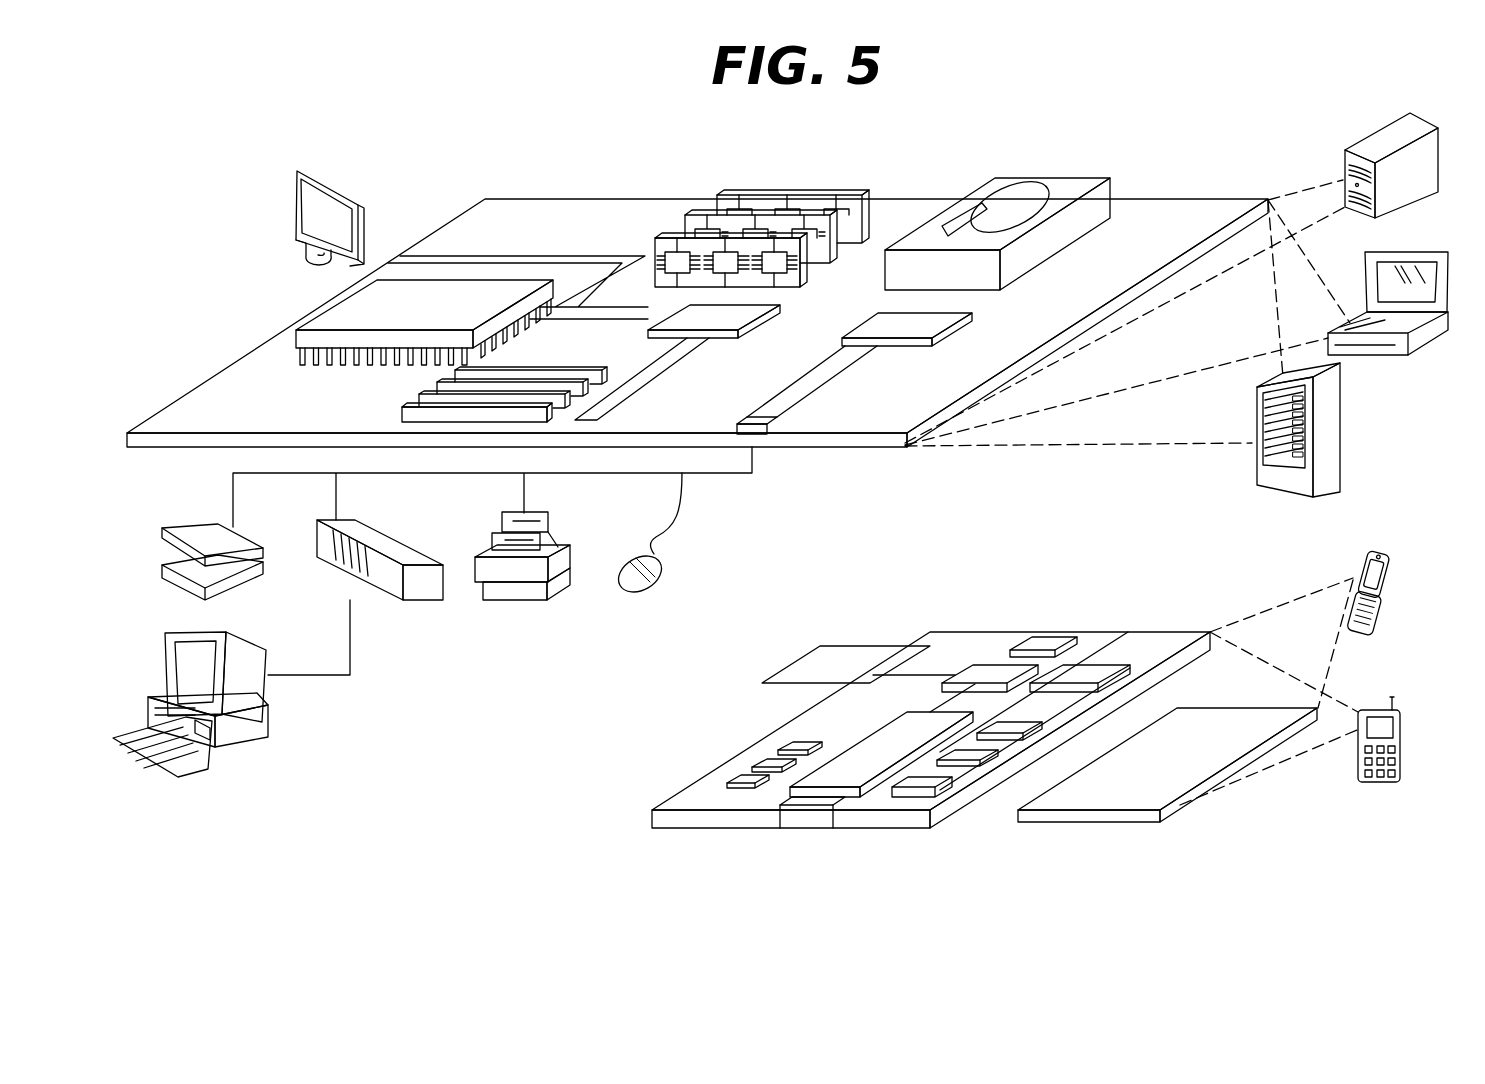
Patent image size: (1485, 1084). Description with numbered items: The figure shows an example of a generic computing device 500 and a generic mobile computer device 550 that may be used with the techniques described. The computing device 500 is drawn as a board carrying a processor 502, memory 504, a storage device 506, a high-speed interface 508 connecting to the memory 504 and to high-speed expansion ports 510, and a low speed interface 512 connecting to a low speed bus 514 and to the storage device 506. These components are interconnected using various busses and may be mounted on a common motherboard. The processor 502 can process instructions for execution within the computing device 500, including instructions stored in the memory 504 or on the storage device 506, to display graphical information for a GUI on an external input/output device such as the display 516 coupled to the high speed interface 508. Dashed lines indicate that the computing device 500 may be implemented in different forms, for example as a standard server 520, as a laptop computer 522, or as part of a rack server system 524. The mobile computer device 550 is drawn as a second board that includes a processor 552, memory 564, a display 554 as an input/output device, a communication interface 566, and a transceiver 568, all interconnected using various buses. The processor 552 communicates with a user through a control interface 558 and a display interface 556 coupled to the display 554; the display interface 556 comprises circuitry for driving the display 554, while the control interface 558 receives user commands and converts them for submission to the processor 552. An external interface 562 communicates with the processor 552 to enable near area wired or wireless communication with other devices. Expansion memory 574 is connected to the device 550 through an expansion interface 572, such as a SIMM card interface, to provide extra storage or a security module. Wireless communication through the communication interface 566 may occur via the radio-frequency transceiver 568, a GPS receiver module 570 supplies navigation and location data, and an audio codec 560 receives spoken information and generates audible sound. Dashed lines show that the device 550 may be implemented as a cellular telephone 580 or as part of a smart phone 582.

The computing device 500 is at (436, 149).
The processor 502 is at (321, 312).
The memory 504 is at (797, 194).
The storage device 506 is at (1044, 174).
The high-speed interface 508 is at (726, 313).
The high-speed expansion ports 510 is at (430, 393).
The low speed interface 512 is at (879, 320).
The low speed bus 514 is at (758, 418).
The display 516 is at (299, 166).
The standard server 520 is at (1367, 142).
The laptop computer 522 is at (1425, 252).
The rack server system 524 is at (1341, 436).
The mobile computer device 550 is at (605, 836).
The processor 552 is at (850, 758).
The display 554 is at (1208, 725).
The display interface 556 is at (935, 785).
The control interface 558 is at (973, 750).
The audio codec 560 is at (1010, 725).
The external interface 562 is at (807, 813).
The memory 564 is at (760, 765).
The communication interface 566 is at (992, 667).
The transceiver 568 is at (1087, 668).
The GPS receiver module 570 is at (1045, 643).
The expansion interface 572 is at (910, 644).
The expansion memory 574 is at (822, 645).
The cellular telephone 580 is at (1364, 550).
The smart phone 582 is at (1375, 708).